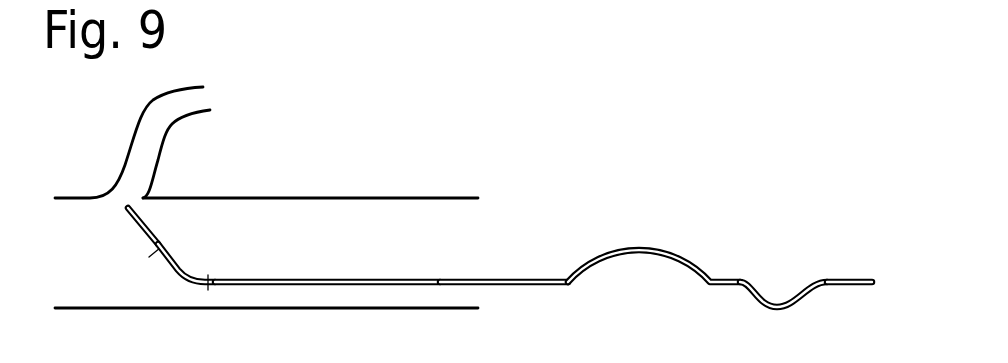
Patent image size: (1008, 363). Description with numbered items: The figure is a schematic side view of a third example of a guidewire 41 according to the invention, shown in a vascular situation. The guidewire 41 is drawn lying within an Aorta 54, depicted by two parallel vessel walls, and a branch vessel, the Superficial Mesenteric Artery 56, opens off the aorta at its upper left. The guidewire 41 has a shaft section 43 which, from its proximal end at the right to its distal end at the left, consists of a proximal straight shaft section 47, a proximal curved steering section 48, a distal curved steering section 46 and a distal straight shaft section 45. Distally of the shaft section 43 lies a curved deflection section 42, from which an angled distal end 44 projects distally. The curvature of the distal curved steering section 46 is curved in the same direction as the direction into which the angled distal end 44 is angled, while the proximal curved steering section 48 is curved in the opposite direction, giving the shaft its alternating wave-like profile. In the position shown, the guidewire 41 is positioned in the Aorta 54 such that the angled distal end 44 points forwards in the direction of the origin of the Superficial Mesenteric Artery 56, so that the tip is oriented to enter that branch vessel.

The guidewire 41 is at (490, 225).
The curved deflection section 42 is at (182, 268).
The shaft section 43 is at (408, 278).
The angled distal end 44 is at (139, 224).
The distal straight shaft section 45 is at (513, 285).
The distal curved steering section 46 is at (643, 250).
The proximal straight shaft section 47 is at (857, 281).
The proximal curved steering section 48 is at (782, 306).
The Aorta 54 is at (283, 309).
The Superficial Mesenteric Artery 56 is at (162, 113).